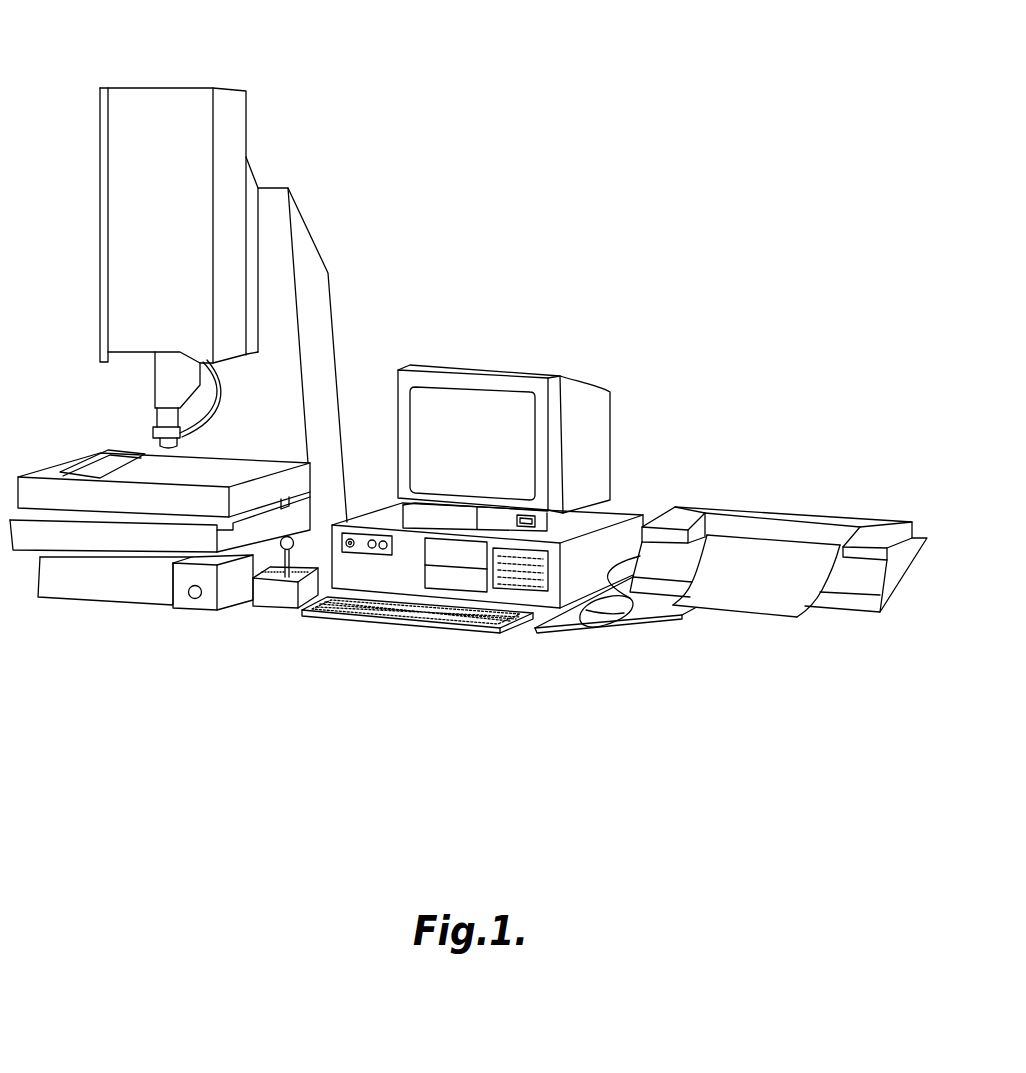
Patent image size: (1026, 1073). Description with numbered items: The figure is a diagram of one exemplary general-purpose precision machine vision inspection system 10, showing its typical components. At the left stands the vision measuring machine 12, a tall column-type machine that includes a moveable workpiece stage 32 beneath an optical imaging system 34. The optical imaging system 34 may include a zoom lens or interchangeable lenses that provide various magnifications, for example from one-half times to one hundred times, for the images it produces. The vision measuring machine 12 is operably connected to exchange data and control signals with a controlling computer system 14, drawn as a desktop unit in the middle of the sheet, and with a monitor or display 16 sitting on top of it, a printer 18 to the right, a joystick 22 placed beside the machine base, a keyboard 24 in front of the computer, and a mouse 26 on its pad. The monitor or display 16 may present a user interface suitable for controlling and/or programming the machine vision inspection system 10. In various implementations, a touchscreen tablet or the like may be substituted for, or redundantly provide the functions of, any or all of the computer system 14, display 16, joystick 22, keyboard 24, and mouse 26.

The machine vision inspection system 10 is at (615, 158).
The vision measuring machine 12 is at (158, 87).
The controlling computer system 14 is at (615, 512).
The monitor or display 16 is at (487, 368).
The printer 18 is at (794, 508).
The joystick 22 is at (273, 608).
The keyboard 24 is at (397, 622).
The mouse 26 is at (612, 617).
The moveable workpiece stage 32 is at (68, 462).
The optical imaging system 34 is at (153, 352).